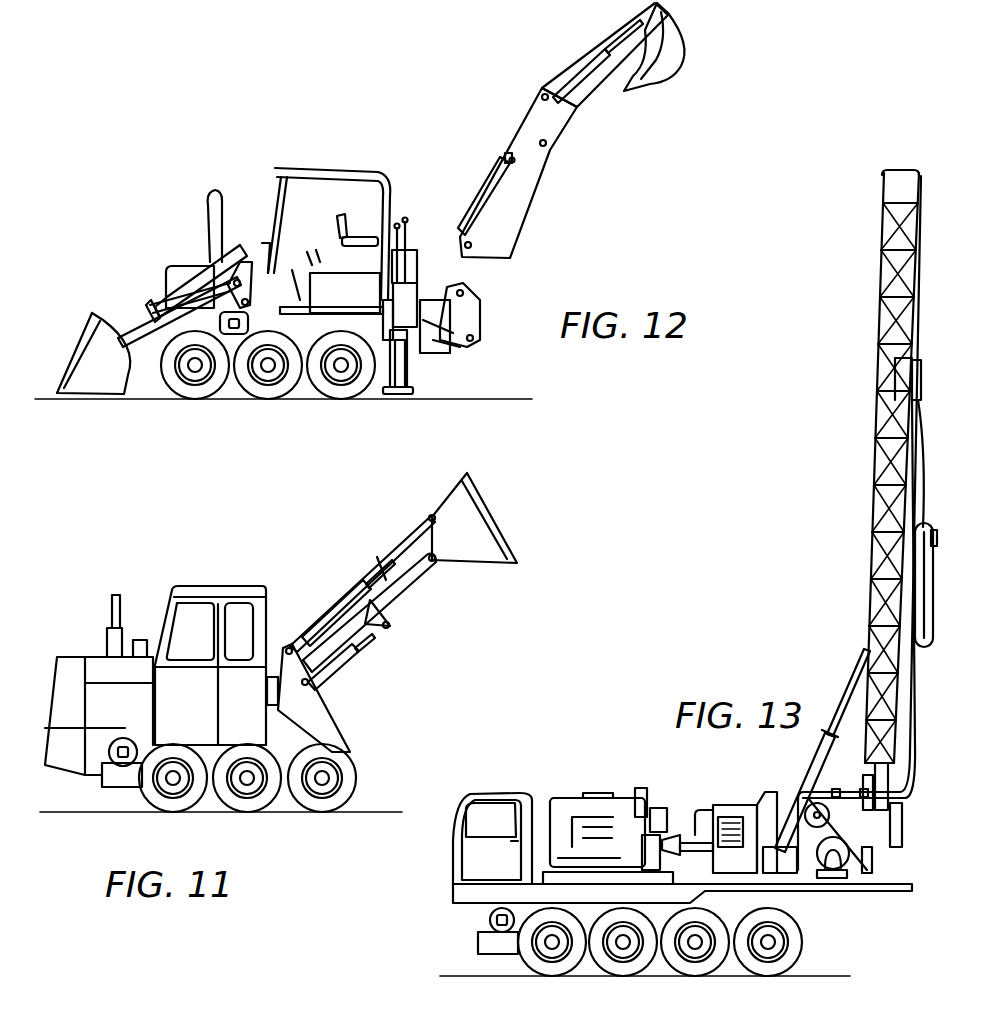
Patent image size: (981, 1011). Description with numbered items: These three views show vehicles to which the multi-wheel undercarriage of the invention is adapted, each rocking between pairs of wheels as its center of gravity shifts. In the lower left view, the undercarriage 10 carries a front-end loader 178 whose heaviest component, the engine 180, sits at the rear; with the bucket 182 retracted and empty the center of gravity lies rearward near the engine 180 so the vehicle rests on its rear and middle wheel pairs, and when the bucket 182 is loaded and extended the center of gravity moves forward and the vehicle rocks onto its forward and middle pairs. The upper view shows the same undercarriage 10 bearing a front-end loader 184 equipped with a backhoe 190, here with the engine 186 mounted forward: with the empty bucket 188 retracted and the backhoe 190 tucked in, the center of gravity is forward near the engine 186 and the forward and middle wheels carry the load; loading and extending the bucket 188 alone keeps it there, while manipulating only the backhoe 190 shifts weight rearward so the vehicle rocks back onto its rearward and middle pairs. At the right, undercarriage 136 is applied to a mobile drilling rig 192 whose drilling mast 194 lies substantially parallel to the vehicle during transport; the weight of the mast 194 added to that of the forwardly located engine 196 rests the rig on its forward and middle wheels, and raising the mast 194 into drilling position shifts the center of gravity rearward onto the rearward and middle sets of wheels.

In FIG. 12, the undercarriage 10 is at (350, 406).
In FIG. 11, the undercarriage 10 is at (368, 784).
In FIG. 13, the undercarriage 136 is at (824, 950).
In FIG. 11, the front-end loader 178 is at (271, 551).
In FIG. 11, the engine 180 is at (102, 672).
In FIG. 11, the bucket 182 is at (404, 531).
In FIG. 12, the backhoe loader 184 is at (312, 281).
In FIG. 12, the engine 186 is at (182, 268).
In FIG. 12, the bucket 188 is at (79, 324).
In FIG. 12, the backhoe 190 is at (611, 120).
In FIG. 13, the mobile drilling rig 192 is at (643, 748).
In FIG. 13, the drilling mast 194 is at (864, 502).
In FIG. 13, the engine 196 is at (568, 808).